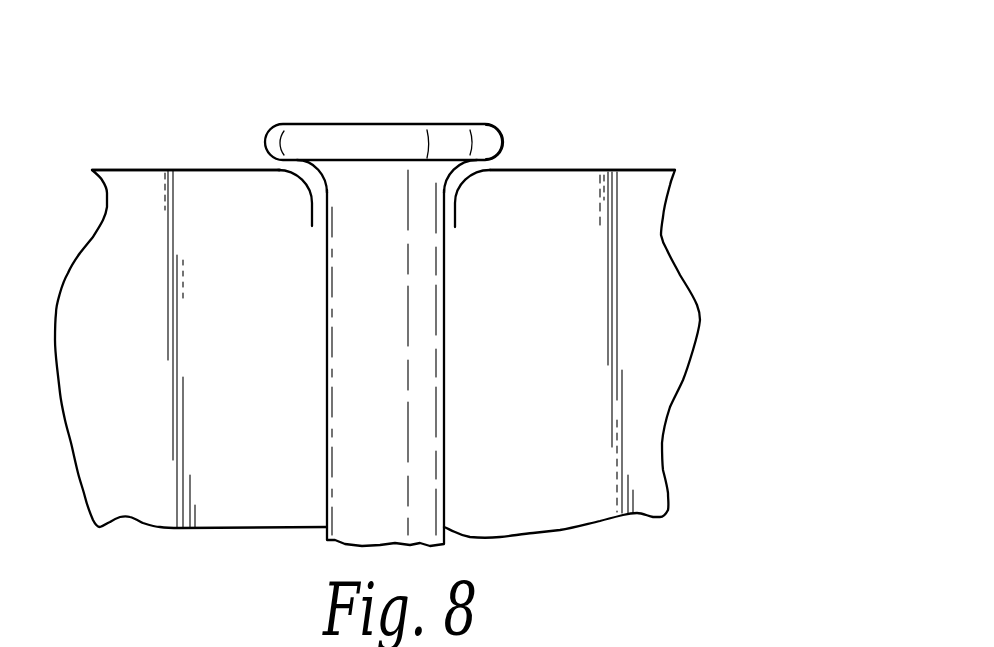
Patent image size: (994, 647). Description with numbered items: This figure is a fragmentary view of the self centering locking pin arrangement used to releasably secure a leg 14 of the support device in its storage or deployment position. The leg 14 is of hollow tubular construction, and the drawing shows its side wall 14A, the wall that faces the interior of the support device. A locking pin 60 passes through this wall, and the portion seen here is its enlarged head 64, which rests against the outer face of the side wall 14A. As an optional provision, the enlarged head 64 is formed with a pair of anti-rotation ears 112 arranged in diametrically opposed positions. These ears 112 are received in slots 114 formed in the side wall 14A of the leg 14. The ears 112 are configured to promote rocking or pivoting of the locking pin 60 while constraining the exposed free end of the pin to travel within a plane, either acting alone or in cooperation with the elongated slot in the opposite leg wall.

The leg 14 is at (652, 290).
The side wall 14A is at (642, 168).
The locking pin 60 is at (410, 460).
The enlarged head 64 is at (417, 133).
The anti-rotation ears 112 is at (312, 170).
The slots 114 is at (303, 188).